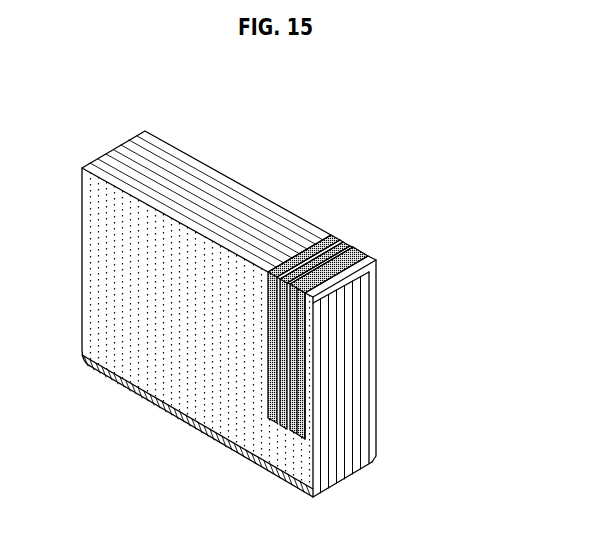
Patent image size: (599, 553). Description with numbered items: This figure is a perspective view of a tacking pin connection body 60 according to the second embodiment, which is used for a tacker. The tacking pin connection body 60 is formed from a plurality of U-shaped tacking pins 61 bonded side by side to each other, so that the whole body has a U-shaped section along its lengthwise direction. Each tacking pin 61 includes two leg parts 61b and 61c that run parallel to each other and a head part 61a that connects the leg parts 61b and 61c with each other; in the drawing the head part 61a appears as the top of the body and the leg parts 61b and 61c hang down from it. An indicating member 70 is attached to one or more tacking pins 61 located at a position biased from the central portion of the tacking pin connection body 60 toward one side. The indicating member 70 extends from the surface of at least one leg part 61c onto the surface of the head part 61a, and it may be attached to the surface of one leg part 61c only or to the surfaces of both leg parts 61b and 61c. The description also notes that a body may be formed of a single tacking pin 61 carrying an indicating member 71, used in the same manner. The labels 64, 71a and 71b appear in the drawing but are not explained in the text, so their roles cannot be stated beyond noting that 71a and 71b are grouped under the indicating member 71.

The tacking pin connection body 60 is at (227, 167).
The tacking pin 61 is at (423, 378).
The head part 61a is at (346, 287).
The leg part 61b is at (376, 358).
The leg part 61c is at (396, 481).
The base plate 64 is at (273, 450).
The indicating member 70 is at (350, 250).
The indicating member 71 is at (192, 367).
The first plate 71a is at (283, 275).
The second plate 71b is at (297, 397).